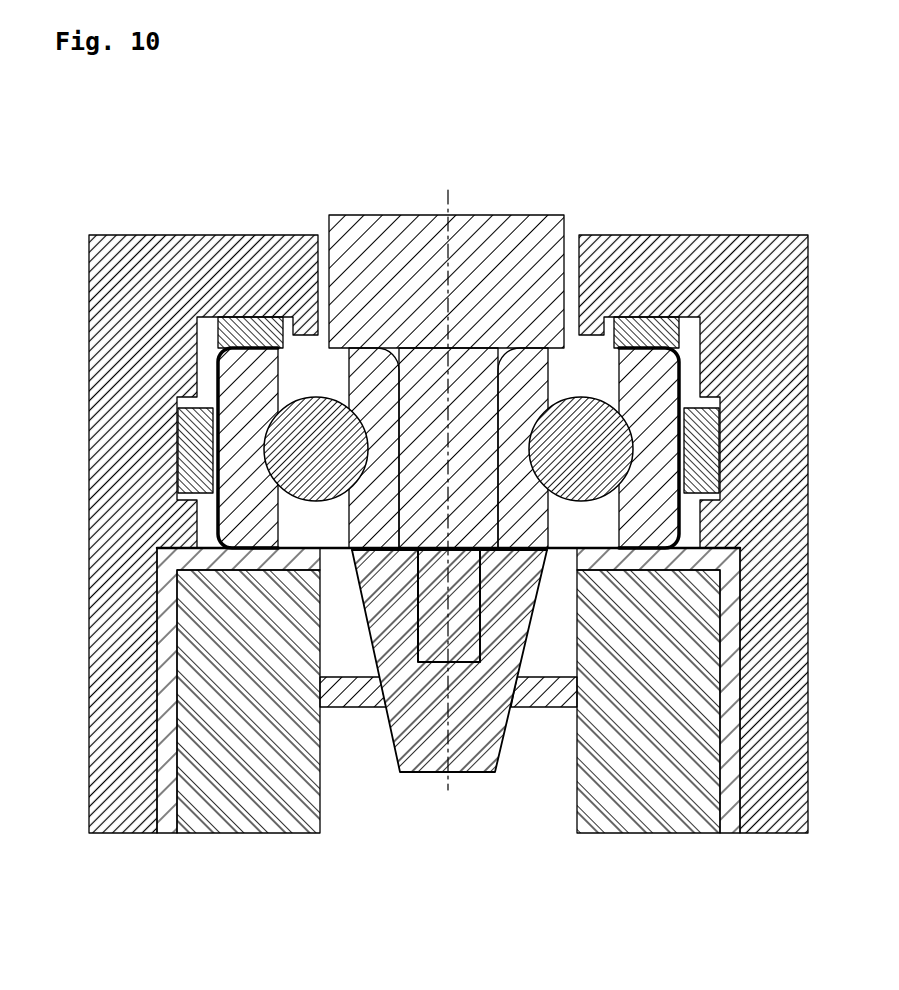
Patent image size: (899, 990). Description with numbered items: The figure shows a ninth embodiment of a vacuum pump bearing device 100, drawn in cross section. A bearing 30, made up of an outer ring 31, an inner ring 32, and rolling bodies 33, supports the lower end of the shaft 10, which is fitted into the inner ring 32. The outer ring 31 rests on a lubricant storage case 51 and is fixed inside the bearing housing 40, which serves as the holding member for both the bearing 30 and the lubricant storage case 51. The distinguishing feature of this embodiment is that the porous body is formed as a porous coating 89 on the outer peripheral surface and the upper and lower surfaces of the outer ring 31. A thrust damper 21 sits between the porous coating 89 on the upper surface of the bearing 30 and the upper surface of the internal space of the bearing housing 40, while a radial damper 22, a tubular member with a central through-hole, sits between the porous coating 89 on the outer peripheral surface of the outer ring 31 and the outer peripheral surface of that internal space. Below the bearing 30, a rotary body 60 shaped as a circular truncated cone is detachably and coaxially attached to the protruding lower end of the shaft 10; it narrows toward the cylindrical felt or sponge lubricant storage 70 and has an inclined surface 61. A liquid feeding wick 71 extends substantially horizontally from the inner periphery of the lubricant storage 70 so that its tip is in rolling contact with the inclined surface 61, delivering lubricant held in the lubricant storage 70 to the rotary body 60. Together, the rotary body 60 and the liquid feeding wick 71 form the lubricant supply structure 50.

The shaft 10 is at (493, 258).
The thrust damper 21 is at (252, 330).
The radial damper 22 is at (186, 440).
The bearing 30 is at (248, 387).
The outer ring 31 is at (262, 434).
The inner ring 32 is at (367, 385).
The rolling bodies 33 is at (255, 492).
The bearing housing 40 is at (750, 268).
The lubricant supply structure 50 is at (567, 885).
The lubricant storage case 51 is at (207, 562).
The rotary body 60 is at (493, 695).
The inclined surface 61 is at (377, 680).
The lubricant storage 70 is at (660, 768).
The liquid feeding wick 71 is at (557, 693).
The porous coating 89 is at (685, 382).
The bearing device 100 is at (722, 153).